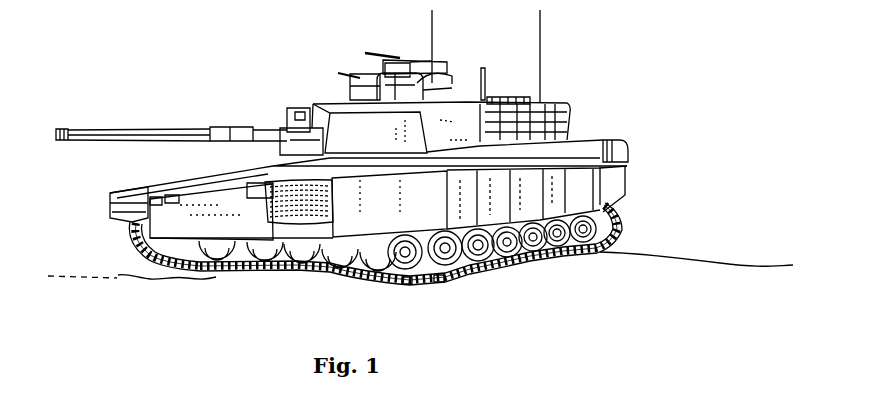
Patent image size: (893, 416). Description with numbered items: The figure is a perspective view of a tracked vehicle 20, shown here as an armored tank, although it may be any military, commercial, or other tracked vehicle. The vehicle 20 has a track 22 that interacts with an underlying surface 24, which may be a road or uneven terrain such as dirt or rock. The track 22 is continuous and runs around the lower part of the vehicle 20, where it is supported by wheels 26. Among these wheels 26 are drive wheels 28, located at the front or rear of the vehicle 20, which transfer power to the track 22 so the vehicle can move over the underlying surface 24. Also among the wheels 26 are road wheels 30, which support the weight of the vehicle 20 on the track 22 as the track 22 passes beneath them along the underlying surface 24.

The tracked vehicle 20 is at (283, 60).
The track 22 is at (342, 266).
The underlying surface 24 is at (420, 284).
The wheels 26 is at (598, 253).
The drive wheels 28 is at (293, 270).
The road wheels 30 is at (440, 277).